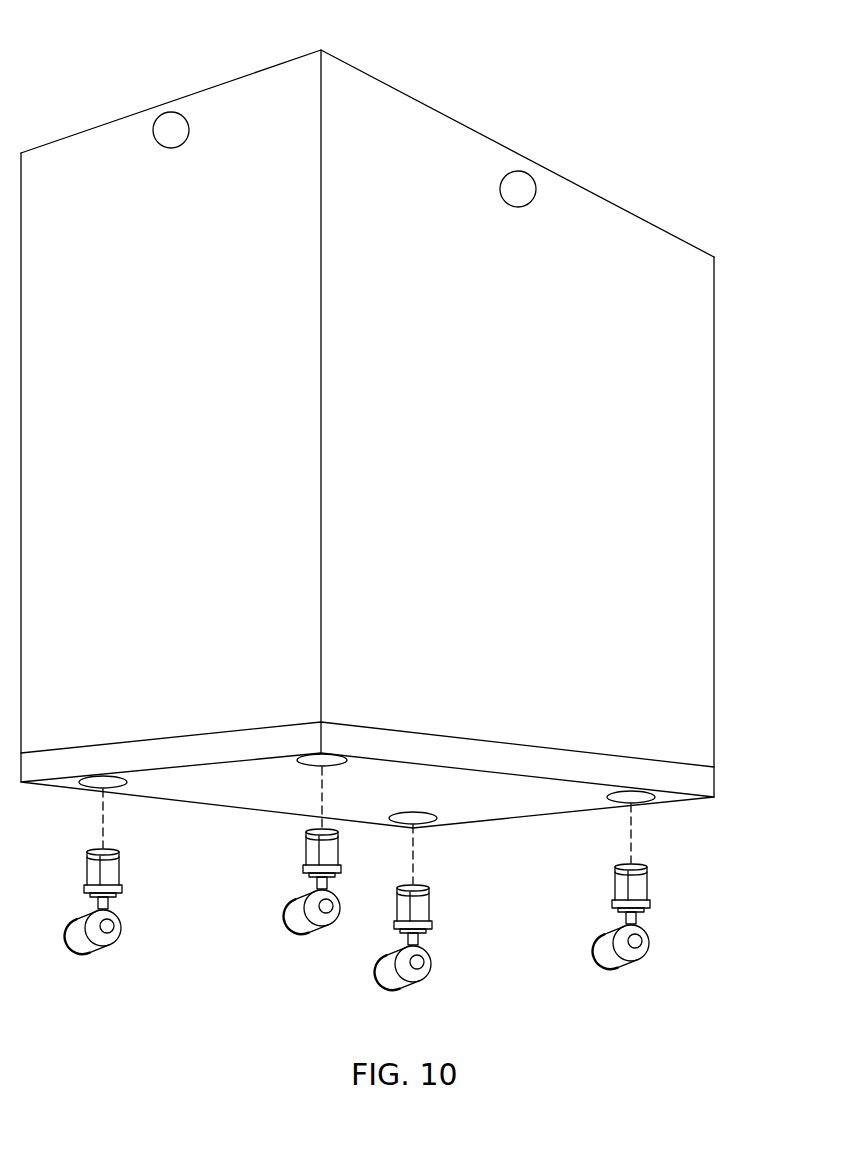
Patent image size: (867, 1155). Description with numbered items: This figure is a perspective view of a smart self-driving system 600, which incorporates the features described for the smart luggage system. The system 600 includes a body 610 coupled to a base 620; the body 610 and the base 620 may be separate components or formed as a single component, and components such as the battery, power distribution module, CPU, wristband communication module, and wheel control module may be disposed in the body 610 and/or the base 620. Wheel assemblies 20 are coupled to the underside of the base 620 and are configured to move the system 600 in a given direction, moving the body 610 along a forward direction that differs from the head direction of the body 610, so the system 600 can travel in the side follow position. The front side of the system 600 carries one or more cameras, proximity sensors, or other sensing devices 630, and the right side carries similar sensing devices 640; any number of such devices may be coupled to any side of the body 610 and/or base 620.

The smart self-driving system 600 is at (630, 70).
The body 610 is at (714, 331).
The base 620 is at (703, 782).
The sensing device 630 is at (171, 127).
The sensing device 640 is at (523, 189).
The wheel assembly 20 is at (108, 965).